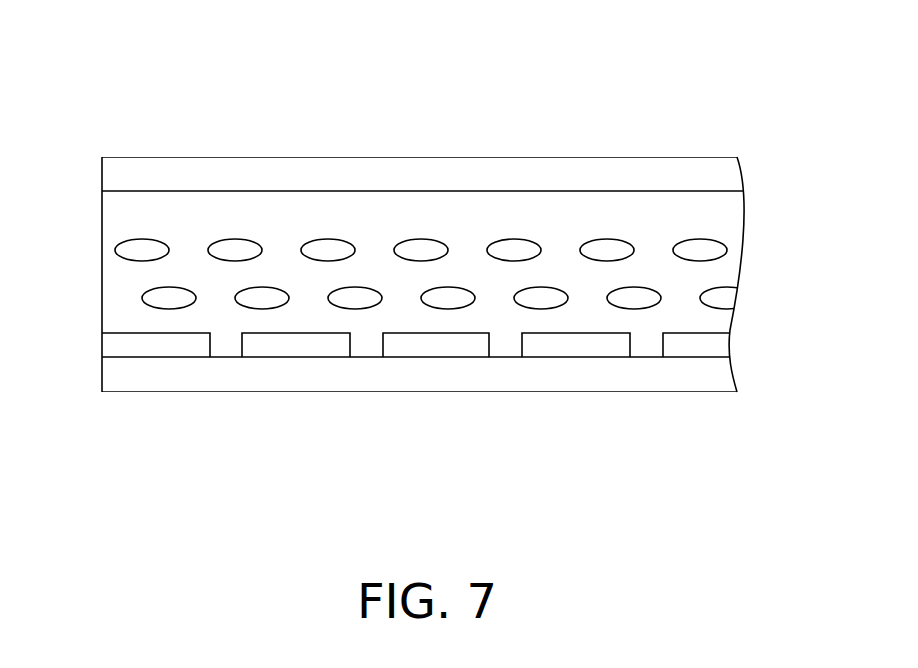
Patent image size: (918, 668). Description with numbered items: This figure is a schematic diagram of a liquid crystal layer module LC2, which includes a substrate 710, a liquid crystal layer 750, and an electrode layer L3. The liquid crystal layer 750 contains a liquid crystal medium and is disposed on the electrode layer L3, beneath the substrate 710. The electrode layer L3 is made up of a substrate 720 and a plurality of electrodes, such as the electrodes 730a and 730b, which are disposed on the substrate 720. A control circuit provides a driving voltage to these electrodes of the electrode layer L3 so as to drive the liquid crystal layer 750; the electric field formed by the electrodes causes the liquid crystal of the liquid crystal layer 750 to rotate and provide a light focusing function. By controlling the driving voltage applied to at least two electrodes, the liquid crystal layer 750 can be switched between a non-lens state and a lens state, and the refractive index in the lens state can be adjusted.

The liquid crystal layer module LC2 is at (691, 95).
The substrate 710 is at (728, 173).
The liquid crystal layer 750 is at (708, 274).
The substrate 720 is at (718, 375).
The electrode 730a is at (165, 348).
The electrode 730b is at (298, 348).
The electrode layer L3 is at (84, 335).